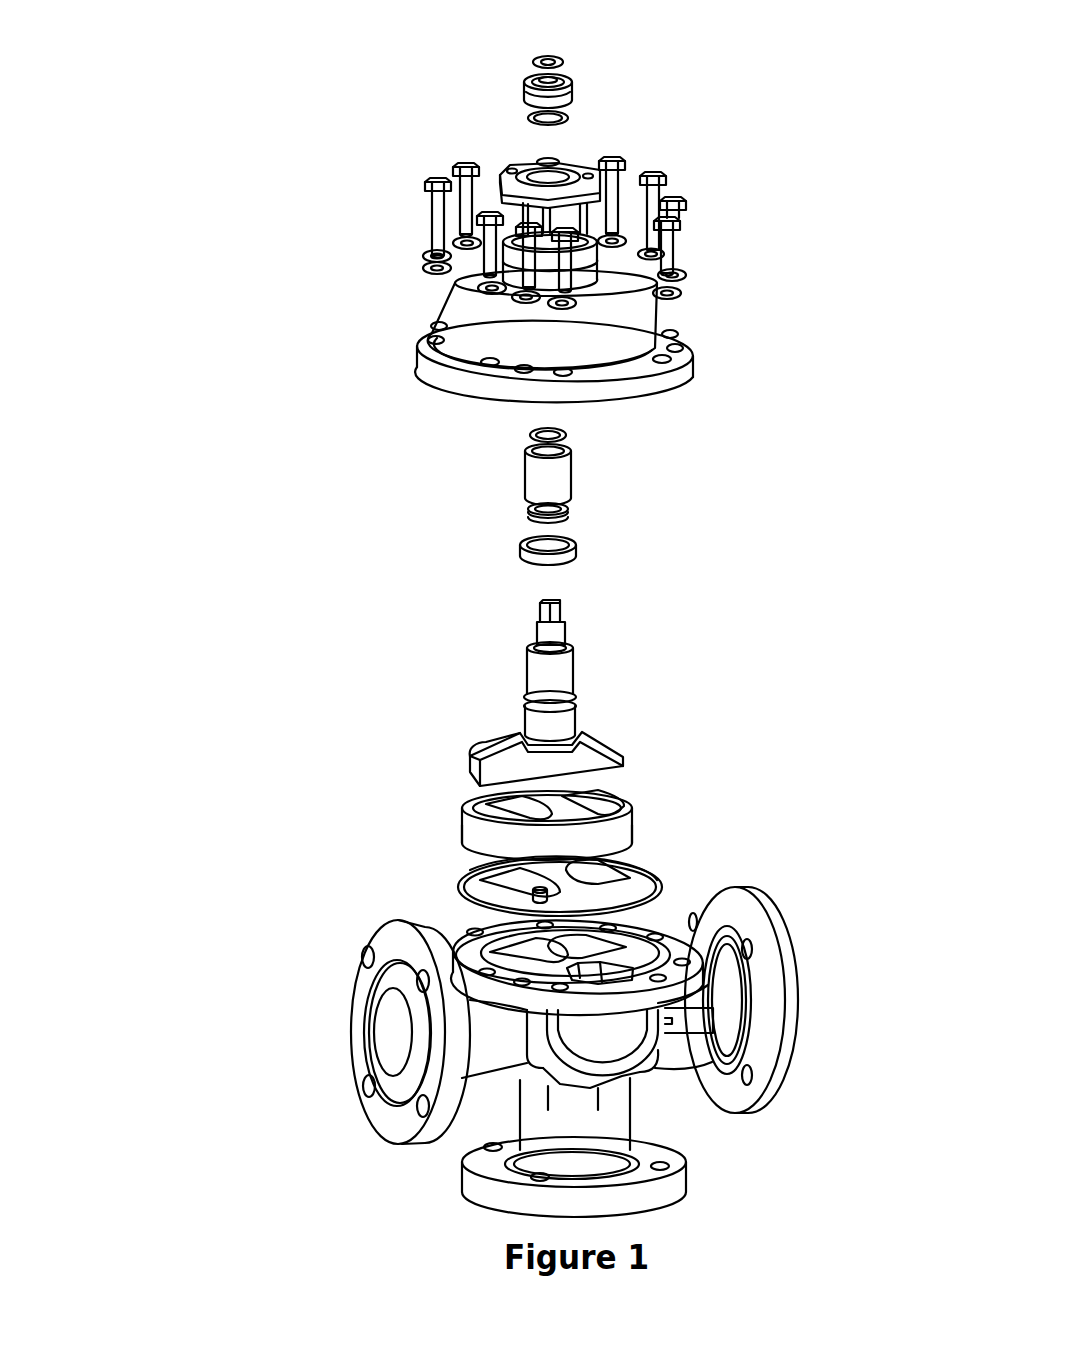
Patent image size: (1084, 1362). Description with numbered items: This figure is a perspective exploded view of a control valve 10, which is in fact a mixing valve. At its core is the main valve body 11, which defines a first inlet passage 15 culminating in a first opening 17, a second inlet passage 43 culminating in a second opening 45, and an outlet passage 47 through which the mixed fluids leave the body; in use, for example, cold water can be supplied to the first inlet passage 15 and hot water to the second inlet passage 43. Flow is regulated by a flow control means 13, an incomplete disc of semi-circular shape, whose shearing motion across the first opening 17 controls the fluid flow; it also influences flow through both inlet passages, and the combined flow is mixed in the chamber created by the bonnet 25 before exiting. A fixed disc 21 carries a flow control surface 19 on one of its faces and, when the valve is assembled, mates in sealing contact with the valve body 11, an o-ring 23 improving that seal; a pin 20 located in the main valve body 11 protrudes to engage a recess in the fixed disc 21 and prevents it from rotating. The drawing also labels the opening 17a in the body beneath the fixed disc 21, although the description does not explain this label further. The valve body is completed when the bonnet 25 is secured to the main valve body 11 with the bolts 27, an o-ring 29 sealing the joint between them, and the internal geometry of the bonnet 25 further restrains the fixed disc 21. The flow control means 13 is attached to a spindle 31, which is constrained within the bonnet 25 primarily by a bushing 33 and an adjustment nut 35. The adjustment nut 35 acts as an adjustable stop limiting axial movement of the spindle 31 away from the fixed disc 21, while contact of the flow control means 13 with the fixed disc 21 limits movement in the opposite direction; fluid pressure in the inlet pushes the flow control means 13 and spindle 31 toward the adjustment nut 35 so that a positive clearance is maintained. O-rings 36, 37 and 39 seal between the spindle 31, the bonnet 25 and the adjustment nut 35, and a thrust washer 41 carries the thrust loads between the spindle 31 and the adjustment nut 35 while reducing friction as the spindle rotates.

The control valve 10 is at (318, 445).
The main valve body 11 is at (544, 1059).
The flow control means 13 is at (606, 741).
The first inlet passage 15 is at (387, 1038).
The first opening 17 is at (458, 808).
The body seat ports 17a is at (488, 937).
The flow control surface 19 is at (530, 770).
The pin 20 is at (506, 850).
The fixed disc 21 is at (621, 828).
The o-ring 23 is at (470, 880).
The bonnet 25 is at (420, 345).
The bolts 27 is at (427, 230).
The o-ring 29 is at (657, 883).
The spindle 31 is at (563, 675).
The bushing 33 is at (562, 475).
The adjustment nut 35 is at (524, 96).
The o-ring 36 is at (570, 518).
The o-ring 37 is at (528, 118).
The o-ring 39 is at (531, 62).
The thrust washer 41 is at (570, 433).
The second inlet passage 43 is at (470, 1183).
The second opening 45 is at (613, 793).
The outlet passage 47 is at (697, 942).